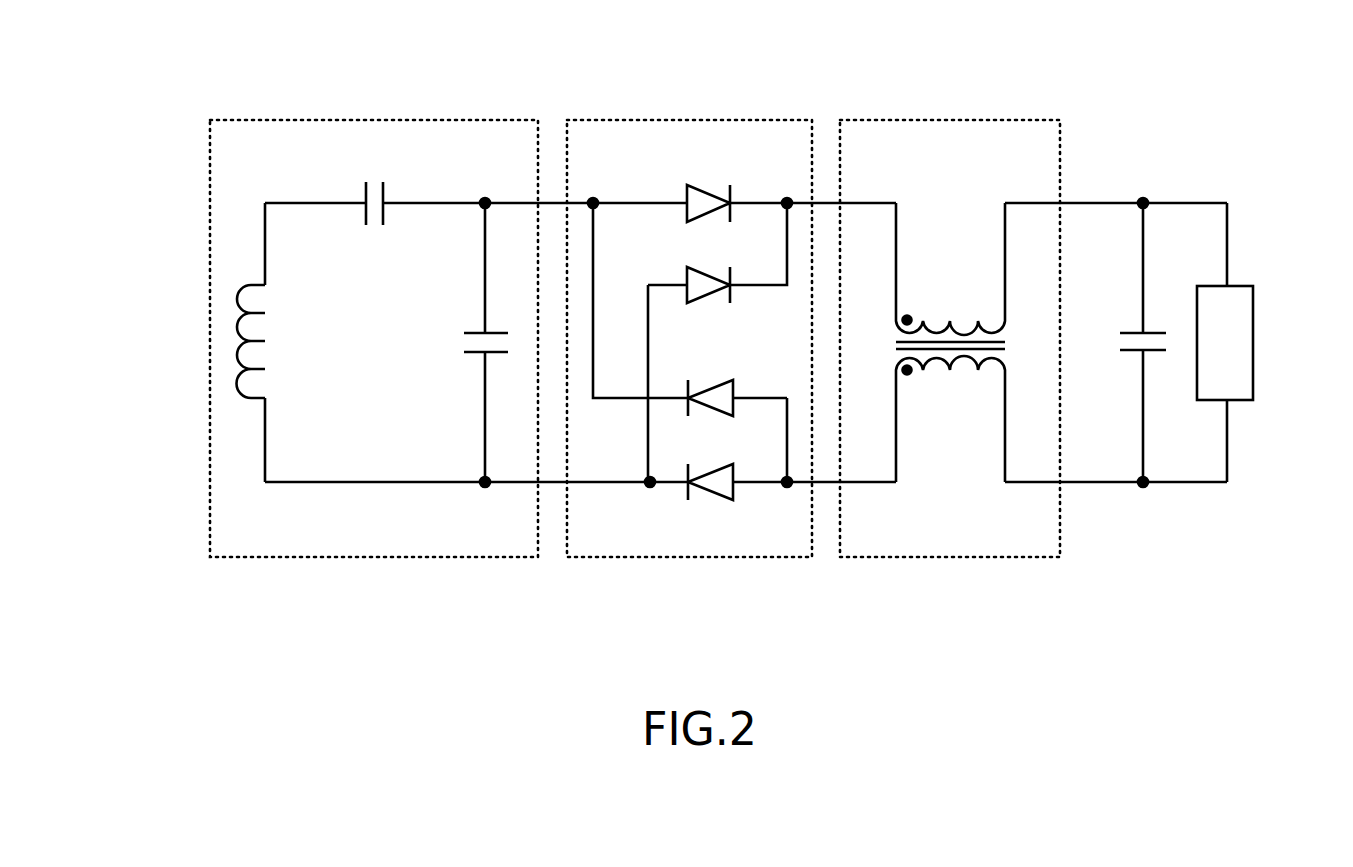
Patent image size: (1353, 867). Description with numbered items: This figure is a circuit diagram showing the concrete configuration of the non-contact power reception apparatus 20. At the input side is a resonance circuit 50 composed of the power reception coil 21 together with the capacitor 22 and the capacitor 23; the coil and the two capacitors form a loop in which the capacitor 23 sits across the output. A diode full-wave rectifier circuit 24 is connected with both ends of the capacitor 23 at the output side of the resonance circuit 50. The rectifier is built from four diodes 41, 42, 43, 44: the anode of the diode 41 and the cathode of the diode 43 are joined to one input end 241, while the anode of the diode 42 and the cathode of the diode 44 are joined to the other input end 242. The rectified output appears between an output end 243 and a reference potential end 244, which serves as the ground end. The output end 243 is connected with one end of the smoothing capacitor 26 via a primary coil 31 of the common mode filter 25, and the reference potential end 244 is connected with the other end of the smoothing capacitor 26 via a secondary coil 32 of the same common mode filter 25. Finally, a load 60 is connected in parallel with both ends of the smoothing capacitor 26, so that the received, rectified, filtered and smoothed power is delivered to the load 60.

The non-contact power reception apparatus 20 is at (584, 50).
The resonance circuit 50 is at (380, 120).
The diode full-wave rectifier circuit 24 is at (694, 120).
The common mode filter 25 is at (926, 120).
The power reception coil 21 is at (240, 355).
The capacitor 22 is at (373, 229).
The capacitor 23 is at (456, 340).
The input end 241 is at (593, 199).
The input end 242 is at (650, 488).
The output end 243 is at (787, 199).
The reference potential end 244 is at (788, 488).
The diode 41 is at (686, 184).
The diode 42 is at (690, 266).
The diode 43 is at (738, 388).
The diode 44 is at (734, 473).
The primary coil 31 is at (953, 316).
The secondary coil 32 is at (950, 374).
The smoothing capacitor 26 is at (1126, 315).
The load 60 is at (1254, 311).